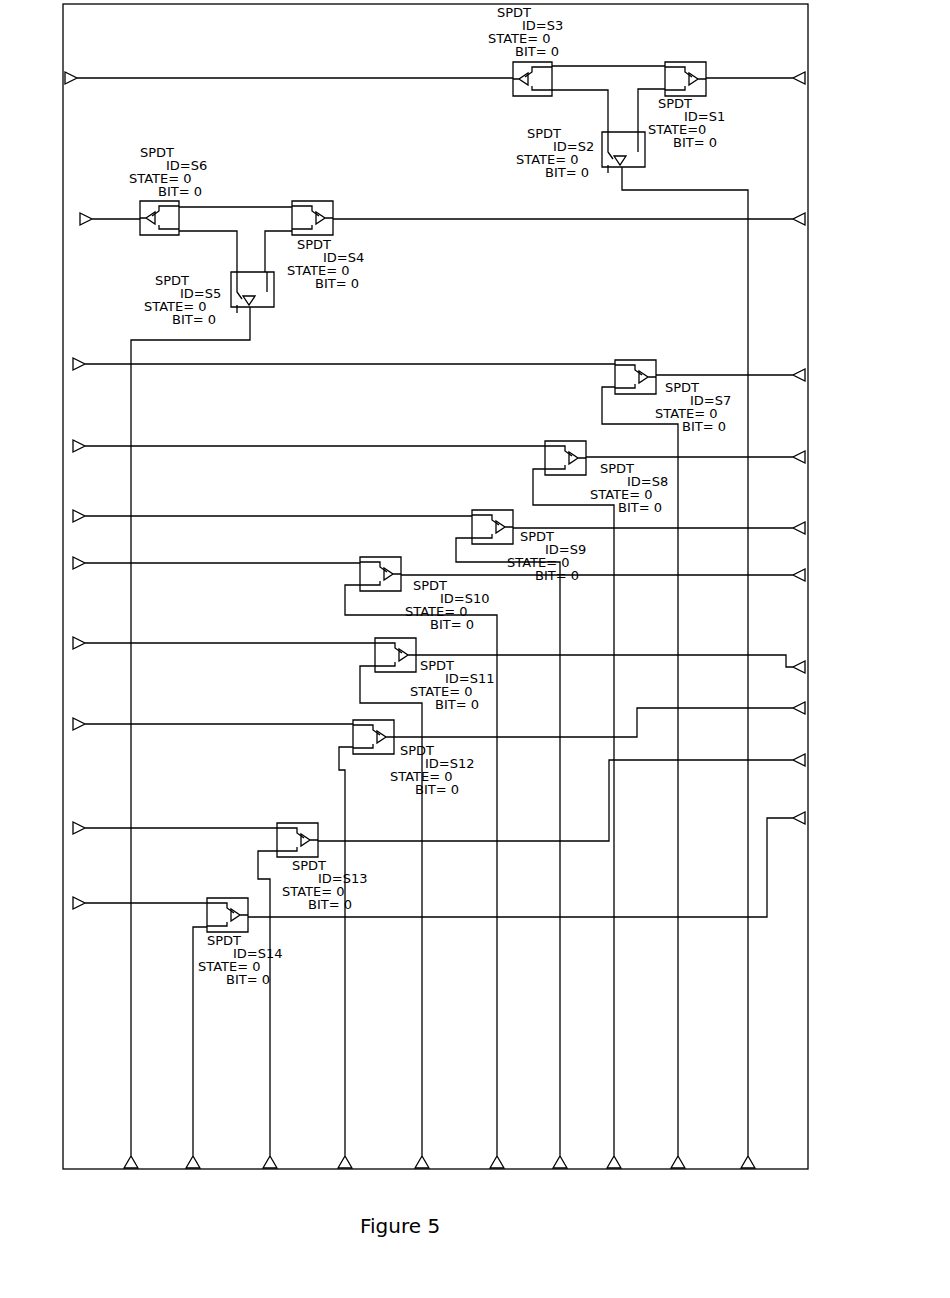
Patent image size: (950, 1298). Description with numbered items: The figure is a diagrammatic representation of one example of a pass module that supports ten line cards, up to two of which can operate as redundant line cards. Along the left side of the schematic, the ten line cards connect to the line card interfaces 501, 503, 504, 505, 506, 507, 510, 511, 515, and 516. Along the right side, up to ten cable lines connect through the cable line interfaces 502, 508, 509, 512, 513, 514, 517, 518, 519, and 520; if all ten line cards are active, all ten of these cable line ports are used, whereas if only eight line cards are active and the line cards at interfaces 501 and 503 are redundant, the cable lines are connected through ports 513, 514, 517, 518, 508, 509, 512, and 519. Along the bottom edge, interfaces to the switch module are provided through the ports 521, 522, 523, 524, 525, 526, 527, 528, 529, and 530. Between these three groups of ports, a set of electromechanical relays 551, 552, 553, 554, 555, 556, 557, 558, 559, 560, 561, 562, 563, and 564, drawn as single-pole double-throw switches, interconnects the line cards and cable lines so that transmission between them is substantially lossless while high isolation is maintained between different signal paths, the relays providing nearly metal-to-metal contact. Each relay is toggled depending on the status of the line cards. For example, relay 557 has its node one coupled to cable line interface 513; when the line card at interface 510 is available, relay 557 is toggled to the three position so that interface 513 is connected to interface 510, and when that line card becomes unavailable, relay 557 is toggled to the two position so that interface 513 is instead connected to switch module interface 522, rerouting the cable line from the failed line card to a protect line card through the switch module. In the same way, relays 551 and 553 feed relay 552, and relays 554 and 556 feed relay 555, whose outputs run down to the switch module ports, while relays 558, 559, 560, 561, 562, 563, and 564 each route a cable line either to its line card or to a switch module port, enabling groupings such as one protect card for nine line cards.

The line card interface 501 is at (267, 60).
The cable line interface 502 is at (778, 100).
The line card interface 503 is at (81, 239).
The line card interface 504 is at (198, 660).
The line card interface 505 is at (187, 742).
The line card interface 506 is at (149, 847).
The line card interface 507 is at (114, 922).
The cable line interface 508 is at (633, 677).
The cable line interface 509 is at (622, 722).
The line card interface 510 is at (318, 345).
The line card interface 511 is at (283, 427).
The cable line interface 512 is at (584, 794).
The cable line interface 513 is at (753, 395).
The cable line interface 514 is at (718, 477).
The line card interface 515 is at (247, 497).
The line card interface 516 is at (191, 580).
The cable line interface 517 is at (681, 546).
The cable line interface 518 is at (625, 593).
The cable line interface 519 is at (549, 861).
The cable line interface 520 is at (591, 239).
The switch module interface port 521 is at (161, 751).
The switch module interface port 522 is at (651, 791).
The switch module interface port 523 is at (584, 832).
The switch module interface port 524 is at (519, 866).
The switch module interface port 525 is at (432, 890).
The switch module interface port 526 is at (175, 1061).
The switch module interface port 527 is at (249, 1023).
The switch module interface port 528 is at (694, 681).
The switch module interface port 529 is at (325, 971).
The switch module interface port 530 is at (401, 930).
The relay 551 is at (686, 67).
The relay 552 is at (636, 154).
The relay 553 is at (532, 87).
The relay 554 is at (313, 205).
The relay 555 is at (263, 295).
The relay 556 is at (159, 226).
The relay 557 is at (638, 365).
The relay 558 is at (566, 446).
The relay 559 is at (488, 515).
The relay 560 is at (381, 562).
The relay 561 is at (396, 644).
The relay 562 is at (374, 726).
The relay 563 is at (298, 829).
The relay 564 is at (228, 903).